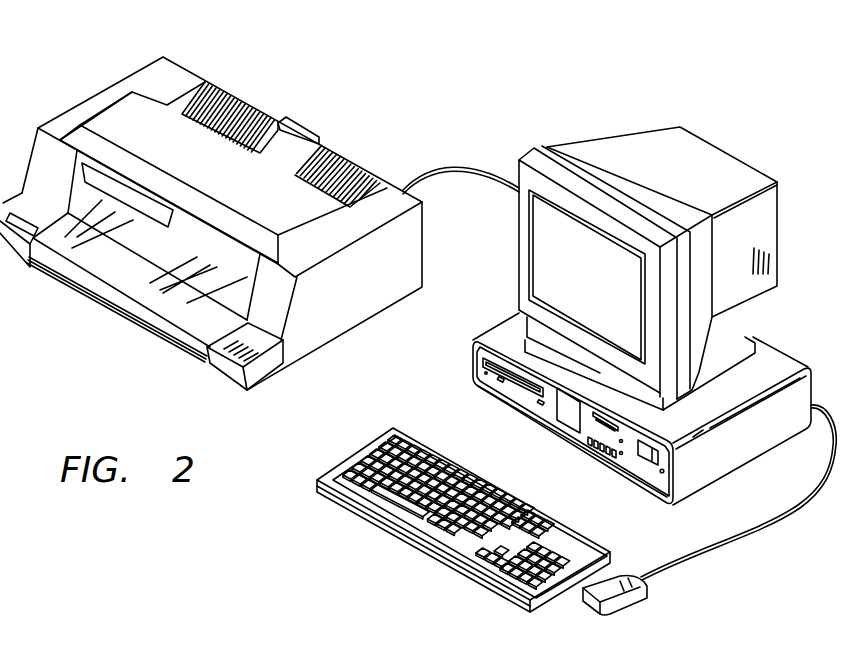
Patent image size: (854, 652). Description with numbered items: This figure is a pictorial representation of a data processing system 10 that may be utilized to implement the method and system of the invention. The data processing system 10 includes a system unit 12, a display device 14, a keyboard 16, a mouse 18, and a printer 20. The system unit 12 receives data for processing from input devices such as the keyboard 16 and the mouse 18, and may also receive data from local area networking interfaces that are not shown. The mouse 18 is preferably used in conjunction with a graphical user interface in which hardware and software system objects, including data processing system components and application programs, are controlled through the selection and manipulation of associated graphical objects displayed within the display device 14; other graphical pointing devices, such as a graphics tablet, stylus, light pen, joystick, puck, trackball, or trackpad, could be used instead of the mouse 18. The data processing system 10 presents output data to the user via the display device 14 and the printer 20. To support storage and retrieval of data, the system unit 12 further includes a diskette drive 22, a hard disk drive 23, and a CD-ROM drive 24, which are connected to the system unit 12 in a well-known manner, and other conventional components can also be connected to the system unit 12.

The data processing system 10 is at (424, 104).
The system unit 12 is at (791, 346).
The display device 14 is at (719, 140).
The keyboard 16 is at (296, 481).
The mouse 18 is at (639, 603).
The printer 20 is at (91, 75).
The diskette drive 22 is at (605, 431).
The hard disk drive 23 is at (563, 409).
The CD-ROM drive 24 is at (524, 384).